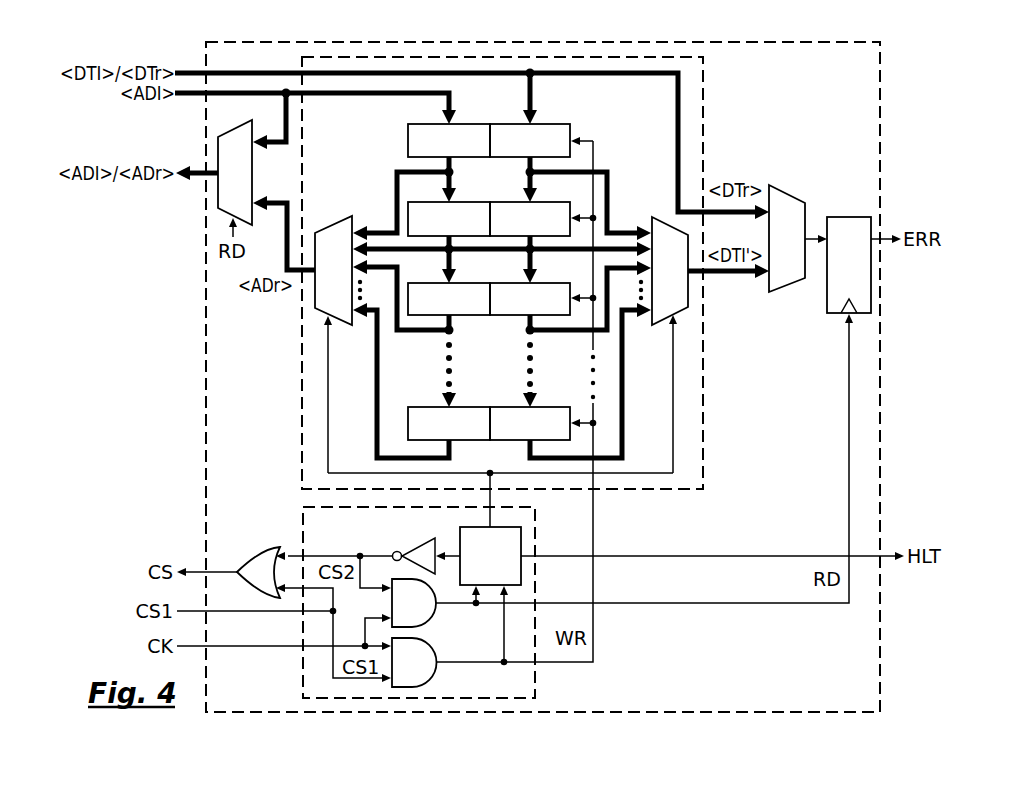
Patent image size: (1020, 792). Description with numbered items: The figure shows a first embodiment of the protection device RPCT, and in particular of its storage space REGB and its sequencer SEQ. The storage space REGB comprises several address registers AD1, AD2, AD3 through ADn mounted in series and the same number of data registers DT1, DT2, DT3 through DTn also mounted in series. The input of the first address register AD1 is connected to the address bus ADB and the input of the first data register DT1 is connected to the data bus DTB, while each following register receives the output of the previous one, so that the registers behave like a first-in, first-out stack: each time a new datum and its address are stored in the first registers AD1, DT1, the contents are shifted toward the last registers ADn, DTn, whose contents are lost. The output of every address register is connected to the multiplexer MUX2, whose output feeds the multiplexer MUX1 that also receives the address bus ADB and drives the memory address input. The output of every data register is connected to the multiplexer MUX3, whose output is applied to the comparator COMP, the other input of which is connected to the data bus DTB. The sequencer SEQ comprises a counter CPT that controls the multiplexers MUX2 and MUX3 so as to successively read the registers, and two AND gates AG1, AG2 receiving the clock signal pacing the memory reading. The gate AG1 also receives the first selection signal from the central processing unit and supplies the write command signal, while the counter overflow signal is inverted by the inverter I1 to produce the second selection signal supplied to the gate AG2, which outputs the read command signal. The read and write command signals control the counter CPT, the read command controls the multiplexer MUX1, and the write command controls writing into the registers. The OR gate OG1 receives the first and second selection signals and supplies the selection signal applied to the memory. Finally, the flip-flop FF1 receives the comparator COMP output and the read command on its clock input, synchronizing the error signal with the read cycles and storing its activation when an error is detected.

The protection device RPCT is at (868, 74).
The storage space REGB is at (605, 118).
The sequencer SEQ is at (358, 541).
The data bus DTB is at (192, 71).
The address bus ADB is at (188, 97).
The multiplexer MUX1 is at (225, 142).
The multiplexer MUX2 is at (323, 240).
The multiplexer MUX3 is at (660, 241).
The first address register AD1 is at (429, 150).
The first data register DT1 is at (511, 150).
The address register AD2 is at (429, 228).
The data register DT2 is at (511, 228).
The address register AD3 is at (429, 308).
The data register DT3 is at (511, 308).
The last address register ADn is at (429, 433).
The last data register DTn is at (511, 433).
The comparator COMP is at (777, 200).
The flip-flop FF1 is at (835, 251).
The counter CPT is at (474, 570).
The inverter I1 is at (419, 540).
The OR-type logic gate OG1 is at (262, 546).
The AND-type logic gate AG1 is at (431, 681).
The AND-type logic gate AG2 is at (431, 621).